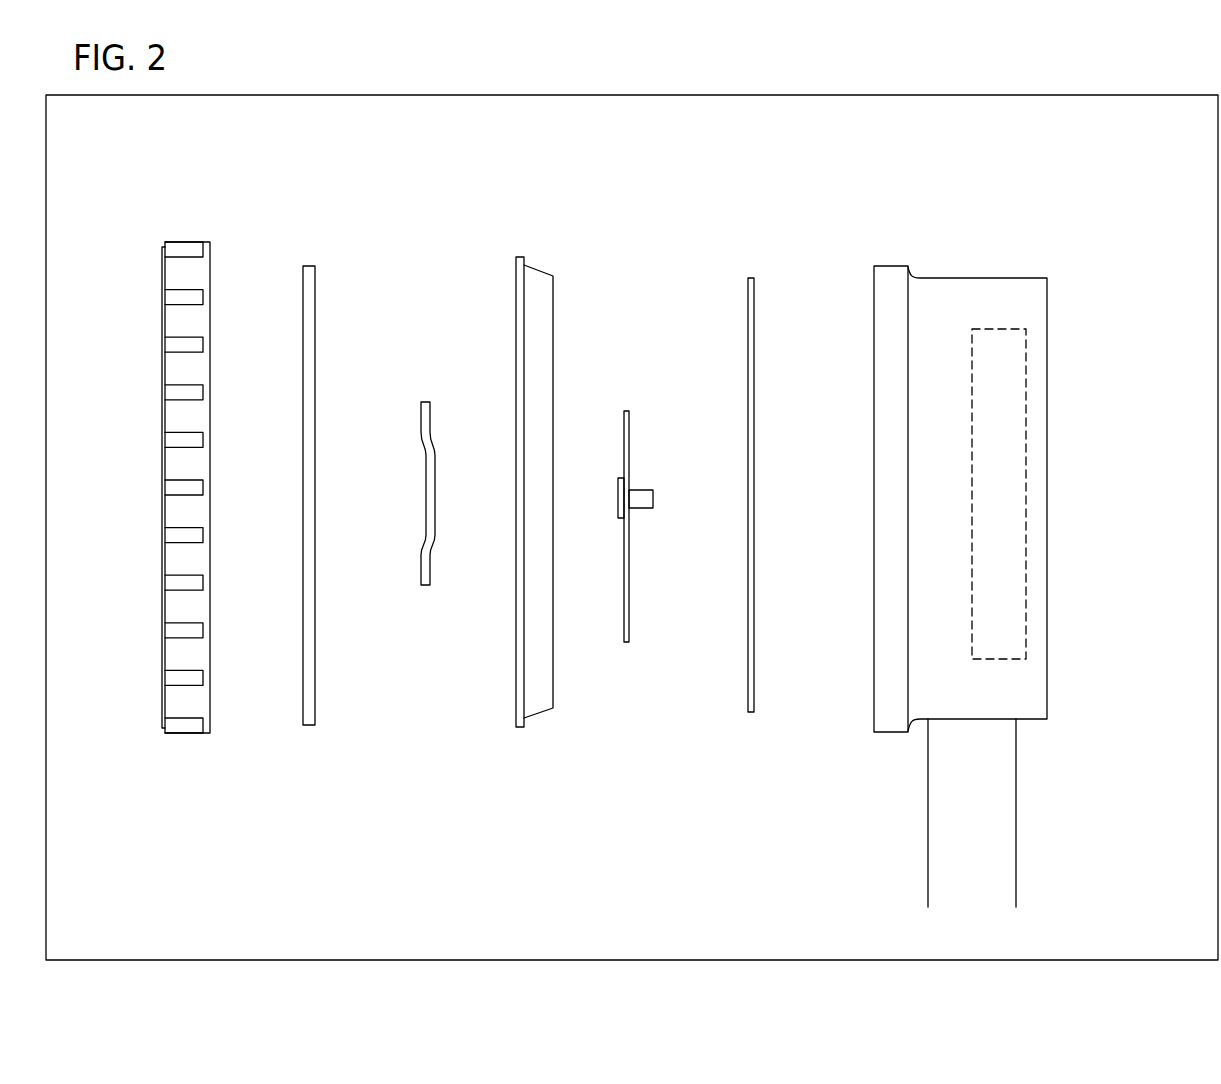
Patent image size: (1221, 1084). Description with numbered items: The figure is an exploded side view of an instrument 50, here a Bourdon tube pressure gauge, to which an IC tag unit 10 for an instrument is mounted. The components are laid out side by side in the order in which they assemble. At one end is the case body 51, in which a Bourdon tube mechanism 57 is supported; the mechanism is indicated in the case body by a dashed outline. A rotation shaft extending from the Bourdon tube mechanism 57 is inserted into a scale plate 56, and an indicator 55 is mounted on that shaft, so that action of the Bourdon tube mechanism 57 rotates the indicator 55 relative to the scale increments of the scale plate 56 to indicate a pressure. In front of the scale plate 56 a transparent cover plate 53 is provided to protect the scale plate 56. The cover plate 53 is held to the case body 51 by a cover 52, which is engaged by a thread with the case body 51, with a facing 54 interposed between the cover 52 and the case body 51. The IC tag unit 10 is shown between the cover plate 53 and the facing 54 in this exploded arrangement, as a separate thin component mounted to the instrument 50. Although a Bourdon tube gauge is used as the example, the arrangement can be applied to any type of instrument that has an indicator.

The IC tag unit 10 is at (425, 402).
The instrument 50 is at (1029, 538).
The case body 51 is at (980, 278).
The cover 52 is at (194, 243).
The transparent cover plate 53 is at (310, 266).
The facing 54 is at (538, 268).
The indicator 55 is at (626, 410).
The scale plate 56 is at (752, 278).
The Bourdon tube mechanism 57 is at (1010, 415).